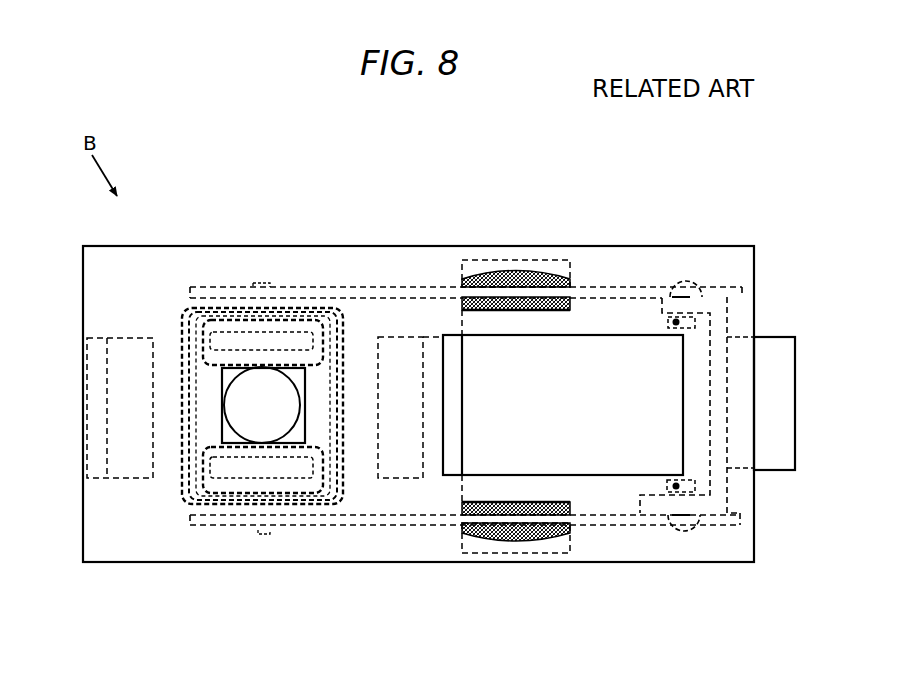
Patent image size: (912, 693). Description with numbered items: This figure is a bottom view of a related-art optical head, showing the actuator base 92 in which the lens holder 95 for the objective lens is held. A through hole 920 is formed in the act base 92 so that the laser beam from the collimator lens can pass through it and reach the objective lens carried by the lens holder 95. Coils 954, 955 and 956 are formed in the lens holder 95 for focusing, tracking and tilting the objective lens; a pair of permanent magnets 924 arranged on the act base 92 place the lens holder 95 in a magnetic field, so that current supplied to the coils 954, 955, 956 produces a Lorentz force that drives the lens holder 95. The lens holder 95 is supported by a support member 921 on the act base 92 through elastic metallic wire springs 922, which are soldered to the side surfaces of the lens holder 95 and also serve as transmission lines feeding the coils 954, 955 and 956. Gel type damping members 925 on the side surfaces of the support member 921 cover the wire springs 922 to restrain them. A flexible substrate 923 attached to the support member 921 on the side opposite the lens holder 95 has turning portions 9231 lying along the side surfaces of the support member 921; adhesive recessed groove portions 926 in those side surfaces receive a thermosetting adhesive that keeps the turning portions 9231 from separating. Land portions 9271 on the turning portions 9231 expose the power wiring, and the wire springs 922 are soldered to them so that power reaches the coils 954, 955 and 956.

The actuator base 92 is at (407, 247).
The through hole 920 is at (220, 443).
The support member 921 is at (611, 310).
The wire springs 922 is at (572, 258).
The flexible substrate 923 is at (723, 428).
The turning portions 9231 is at (680, 300).
The permanent magnets 924 is at (133, 408).
The damping members 925 is at (497, 270).
The adhesive recessed groove portions 926 is at (676, 322).
The land portions 9271 is at (703, 292).
The lens holder 95 is at (187, 512).
The coil 954 is at (323, 517).
The coil 955 is at (183, 320).
The coil 956 is at (310, 368).